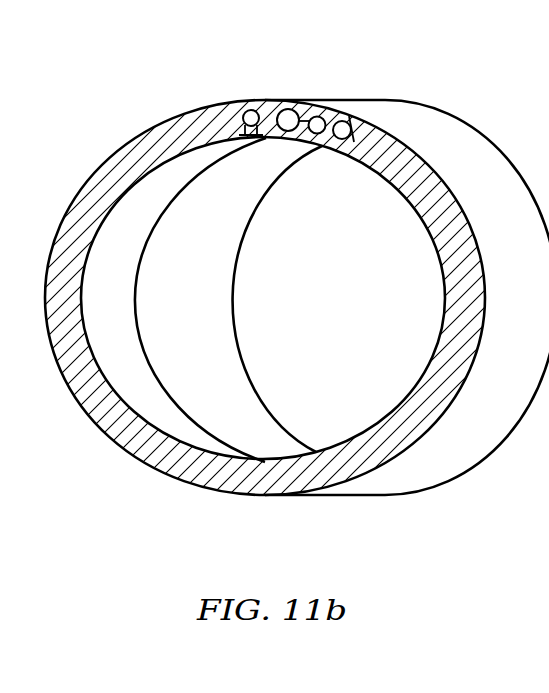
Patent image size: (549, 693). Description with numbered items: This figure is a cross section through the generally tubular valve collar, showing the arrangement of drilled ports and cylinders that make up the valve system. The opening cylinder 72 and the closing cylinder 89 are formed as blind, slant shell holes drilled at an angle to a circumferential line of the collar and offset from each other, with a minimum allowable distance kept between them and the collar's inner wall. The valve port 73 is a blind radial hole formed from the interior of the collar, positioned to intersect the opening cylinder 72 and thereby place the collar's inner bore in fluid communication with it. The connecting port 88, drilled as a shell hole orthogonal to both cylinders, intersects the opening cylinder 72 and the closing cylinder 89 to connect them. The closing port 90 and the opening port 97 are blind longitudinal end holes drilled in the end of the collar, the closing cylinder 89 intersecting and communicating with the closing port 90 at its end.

The opening cylinder 72 is at (246, 109).
The valve port 73 is at (250, 134).
The connecting port 88 is at (305, 119).
The closing cylinder 89 is at (289, 109).
The closing port 90 is at (288, 137).
The opening port 97 is at (338, 121).